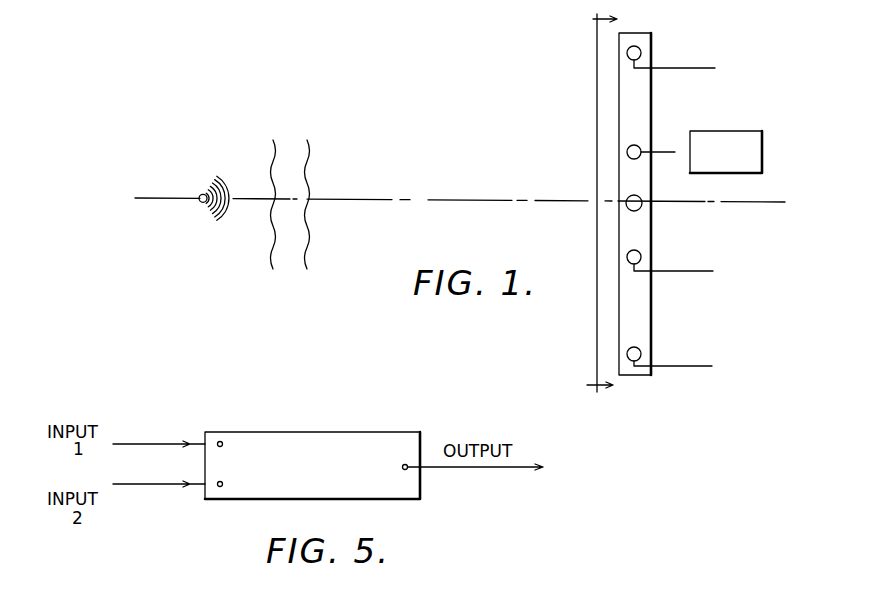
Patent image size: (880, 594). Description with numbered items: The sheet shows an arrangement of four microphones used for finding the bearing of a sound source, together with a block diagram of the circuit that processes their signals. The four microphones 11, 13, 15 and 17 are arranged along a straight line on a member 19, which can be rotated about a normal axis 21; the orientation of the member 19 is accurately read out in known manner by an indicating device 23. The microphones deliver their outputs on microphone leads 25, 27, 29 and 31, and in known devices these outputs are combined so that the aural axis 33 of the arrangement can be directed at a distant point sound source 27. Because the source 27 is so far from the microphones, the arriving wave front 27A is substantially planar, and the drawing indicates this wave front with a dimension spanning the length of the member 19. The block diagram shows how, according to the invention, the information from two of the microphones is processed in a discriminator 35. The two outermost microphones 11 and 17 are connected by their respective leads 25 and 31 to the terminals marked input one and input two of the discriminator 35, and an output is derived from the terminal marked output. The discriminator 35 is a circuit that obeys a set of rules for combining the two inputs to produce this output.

In FIG. 1, the microphone 11 is at (641, 58).
In FIG. 1, the microphone 13 is at (639, 146).
In FIG. 1, the microphone 15 is at (641, 255).
In FIG. 1, the microphone 17 is at (641, 352).
In FIG. 1, the member 19 is at (653, 34).
In FIG. 1, the normal axis 21 is at (640, 209).
In FIG. 1, the indicating device 23 is at (737, 162).
In FIG. 1, the microphone lead 25 is at (700, 68).
In FIG. 5, the microphone lead 25 is at (152, 443).
In FIG. 1, the sound source 27 is at (200, 203).
In FIG. 1, the wave front 27A is at (597, 99).
In FIG. 1, the microphone lead 29 is at (694, 271).
In FIG. 1, the microphone lead 31 is at (694, 367).
In FIG. 5, the microphone lead 31 is at (150, 486).
In FIG. 1, the aural axis 33 is at (440, 200).
In FIG. 5, the discriminator 35 is at (360, 441).